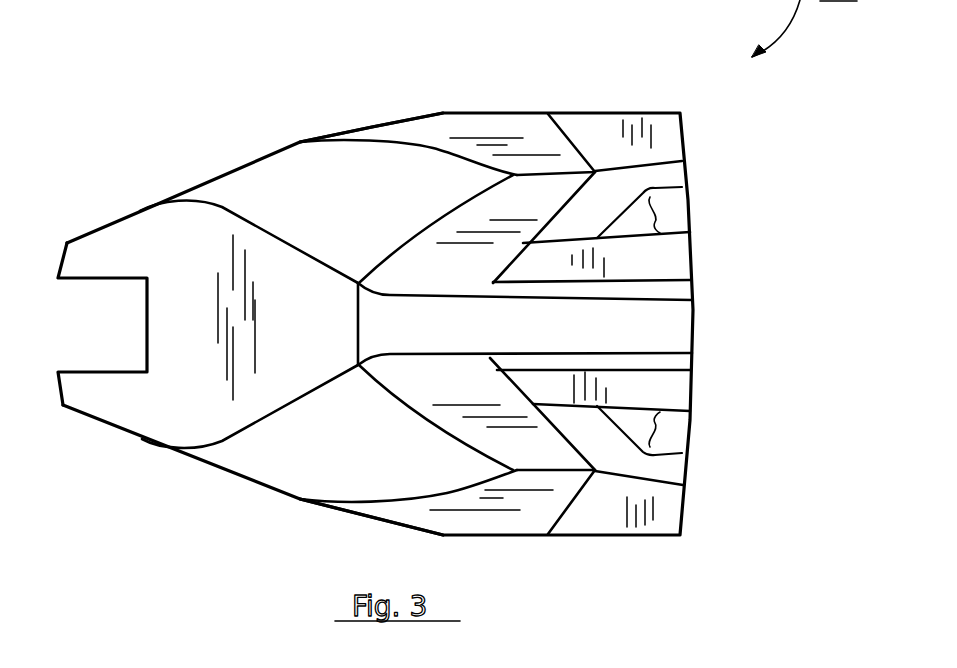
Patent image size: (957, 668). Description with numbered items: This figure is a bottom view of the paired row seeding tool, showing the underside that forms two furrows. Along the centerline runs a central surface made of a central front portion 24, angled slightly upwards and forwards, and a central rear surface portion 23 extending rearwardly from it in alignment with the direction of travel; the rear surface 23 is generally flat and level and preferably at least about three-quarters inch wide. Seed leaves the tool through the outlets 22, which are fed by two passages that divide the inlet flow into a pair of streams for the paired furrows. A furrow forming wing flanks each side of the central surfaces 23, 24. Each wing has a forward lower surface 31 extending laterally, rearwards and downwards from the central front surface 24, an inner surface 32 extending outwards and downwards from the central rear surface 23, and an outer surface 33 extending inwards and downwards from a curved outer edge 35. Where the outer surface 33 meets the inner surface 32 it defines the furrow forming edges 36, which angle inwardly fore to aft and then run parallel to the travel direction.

The outlets 22 is at (687, 172).
The central rear surface portion 23 is at (692, 323).
The central front portion 24 is at (177, 250).
The forward lower surface 31 is at (300, 180).
The inner surface 32 is at (420, 273).
The outer surface 33 is at (507, 130).
The outer edges 35 is at (343, 127).
The furrow forming edges 36 is at (433, 143).